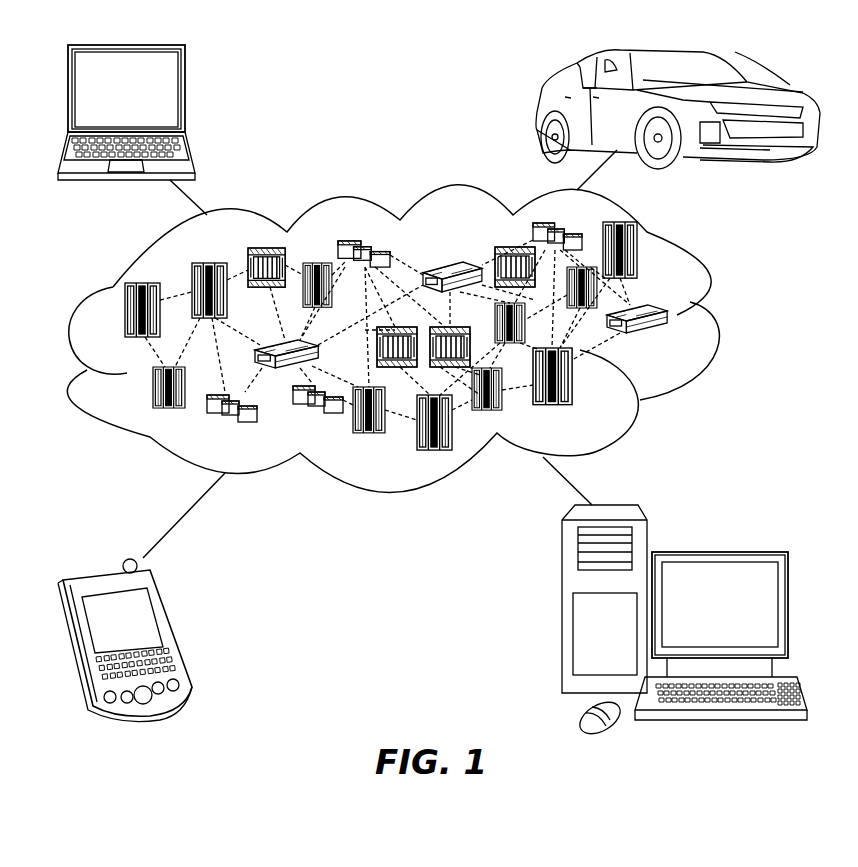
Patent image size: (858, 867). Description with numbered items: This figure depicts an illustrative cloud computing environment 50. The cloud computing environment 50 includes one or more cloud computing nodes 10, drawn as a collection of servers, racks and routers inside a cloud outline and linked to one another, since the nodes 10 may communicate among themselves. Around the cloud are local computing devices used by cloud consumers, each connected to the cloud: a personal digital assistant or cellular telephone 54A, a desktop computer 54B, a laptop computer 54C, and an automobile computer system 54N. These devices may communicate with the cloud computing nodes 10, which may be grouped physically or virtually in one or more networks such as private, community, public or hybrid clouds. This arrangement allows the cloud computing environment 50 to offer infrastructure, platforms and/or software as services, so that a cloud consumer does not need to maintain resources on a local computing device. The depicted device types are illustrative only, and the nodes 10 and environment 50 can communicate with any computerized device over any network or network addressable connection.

The cloud computing nodes 10 is at (670, 343).
The cloud computing environment 50 is at (718, 315).
The personal digital assistant or cellular telephone 54A is at (178, 630).
The desktop computer 54B is at (717, 552).
The laptop computer 54C is at (185, 99).
The automobile computer system 54N is at (538, 113).